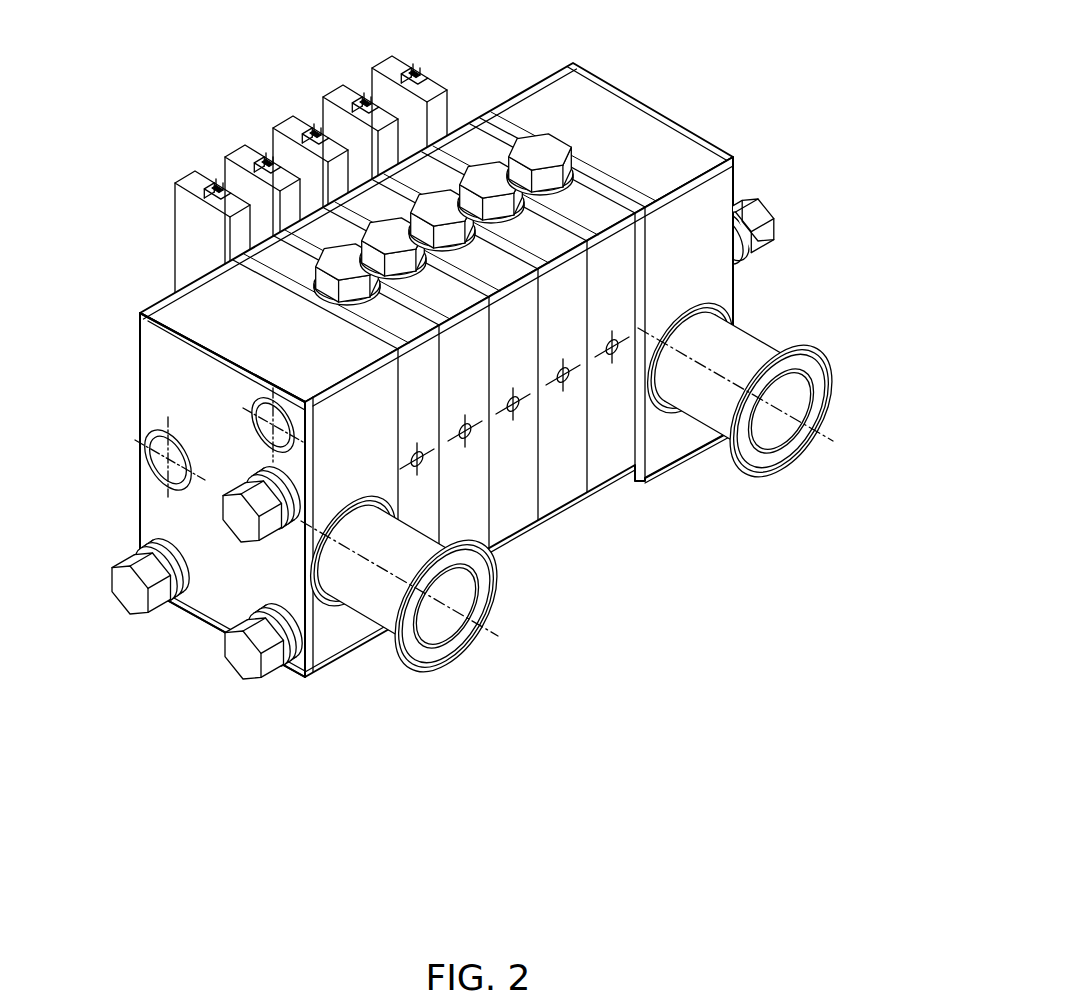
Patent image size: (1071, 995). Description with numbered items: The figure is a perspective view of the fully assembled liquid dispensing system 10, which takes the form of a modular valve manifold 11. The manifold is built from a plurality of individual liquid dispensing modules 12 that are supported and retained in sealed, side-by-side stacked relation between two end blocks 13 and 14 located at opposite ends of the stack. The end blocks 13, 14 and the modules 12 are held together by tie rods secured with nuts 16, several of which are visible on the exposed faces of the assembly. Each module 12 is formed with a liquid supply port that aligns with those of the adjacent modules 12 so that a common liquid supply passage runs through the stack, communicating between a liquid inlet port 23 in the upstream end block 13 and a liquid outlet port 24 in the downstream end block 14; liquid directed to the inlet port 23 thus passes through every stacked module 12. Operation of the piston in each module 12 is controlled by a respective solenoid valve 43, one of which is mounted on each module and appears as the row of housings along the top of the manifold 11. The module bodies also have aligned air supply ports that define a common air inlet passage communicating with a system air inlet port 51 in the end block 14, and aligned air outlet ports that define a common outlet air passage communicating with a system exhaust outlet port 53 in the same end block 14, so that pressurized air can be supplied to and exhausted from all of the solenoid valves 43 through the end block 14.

The liquid dispensing system 10 is at (637, 67).
The modular valve manifold 11 is at (560, 343).
The liquid dispensing module 12 is at (610, 483).
The end block 13 is at (698, 132).
The end block 14 is at (138, 323).
The nut 16 is at (774, 236).
The liquid inlet port 23 is at (833, 398).
The liquid outlet port 24 is at (443, 670).
The solenoid valve 43 is at (382, 70).
The system air inlet port 51 is at (145, 461).
The system exhaust outlet port 53 is at (268, 412).